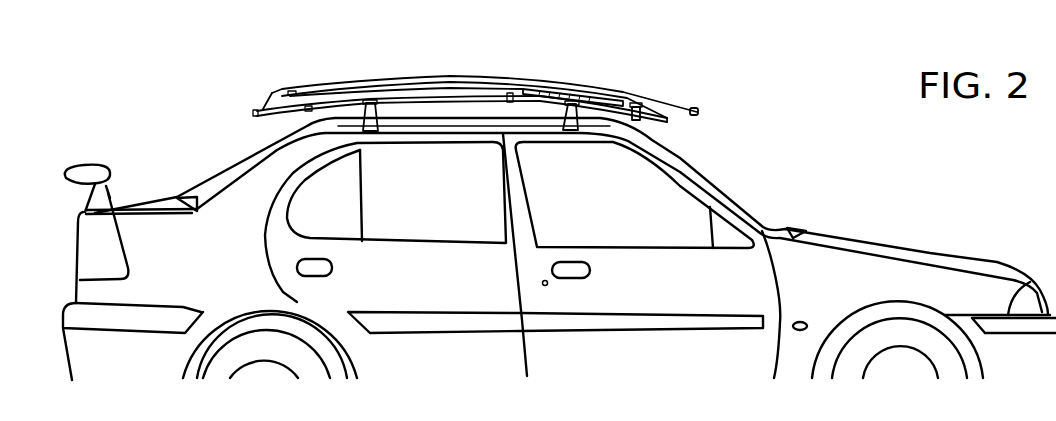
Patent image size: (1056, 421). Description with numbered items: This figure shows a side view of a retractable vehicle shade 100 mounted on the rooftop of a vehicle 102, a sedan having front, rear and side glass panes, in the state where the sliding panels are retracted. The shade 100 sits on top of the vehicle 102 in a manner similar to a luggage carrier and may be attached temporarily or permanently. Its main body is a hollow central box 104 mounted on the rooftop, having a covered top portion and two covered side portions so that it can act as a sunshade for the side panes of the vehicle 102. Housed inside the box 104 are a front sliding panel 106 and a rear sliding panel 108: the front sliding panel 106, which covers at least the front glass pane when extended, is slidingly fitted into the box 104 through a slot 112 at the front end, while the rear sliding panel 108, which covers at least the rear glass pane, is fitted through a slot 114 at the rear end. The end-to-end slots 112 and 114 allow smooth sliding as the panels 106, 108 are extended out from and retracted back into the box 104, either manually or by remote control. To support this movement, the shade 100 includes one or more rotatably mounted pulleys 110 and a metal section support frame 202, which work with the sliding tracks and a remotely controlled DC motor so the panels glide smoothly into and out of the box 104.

The retractable vehicle shade 100 is at (470, 88).
The vehicle 102 is at (802, 253).
The hollow central box 104 is at (465, 85).
The front sliding panel 106 is at (699, 110).
The rear sliding panel 108 is at (250, 114).
The rotatably mounted pulley 110 is at (588, 96).
The slot 112 is at (700, 89).
The slot 114 is at (263, 107).
The metal section support frame 202 is at (641, 117).